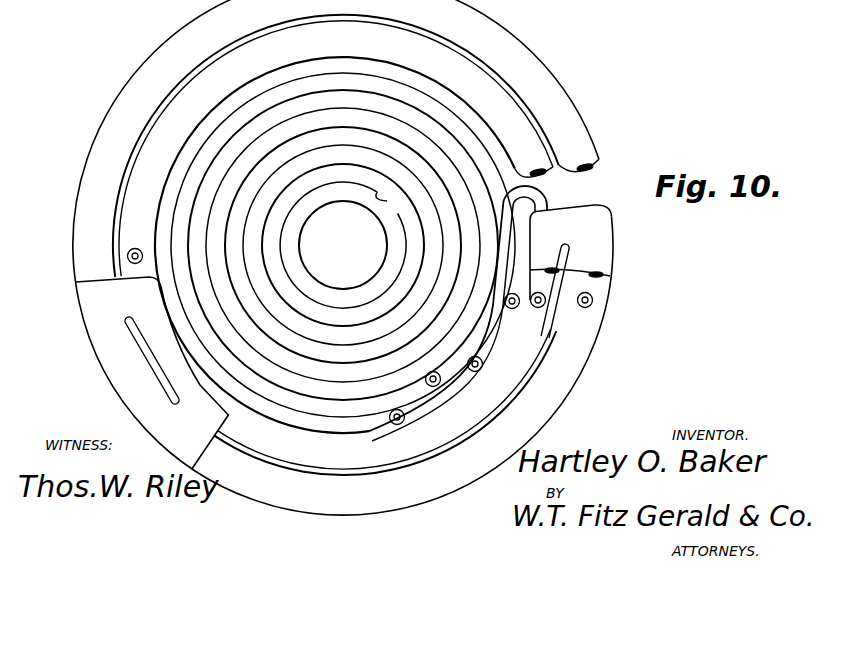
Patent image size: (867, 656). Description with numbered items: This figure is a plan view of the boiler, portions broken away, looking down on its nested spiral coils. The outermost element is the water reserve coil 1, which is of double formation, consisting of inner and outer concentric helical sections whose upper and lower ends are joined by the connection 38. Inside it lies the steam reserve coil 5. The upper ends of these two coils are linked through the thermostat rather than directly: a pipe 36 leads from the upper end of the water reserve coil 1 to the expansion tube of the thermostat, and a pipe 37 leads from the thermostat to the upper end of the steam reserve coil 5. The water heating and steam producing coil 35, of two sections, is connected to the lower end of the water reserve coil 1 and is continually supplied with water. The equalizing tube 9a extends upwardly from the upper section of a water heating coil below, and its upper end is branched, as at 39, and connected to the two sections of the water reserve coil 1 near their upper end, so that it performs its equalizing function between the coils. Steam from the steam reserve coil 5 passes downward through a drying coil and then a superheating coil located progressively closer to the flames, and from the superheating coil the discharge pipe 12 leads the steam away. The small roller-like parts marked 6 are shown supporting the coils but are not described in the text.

The water reserve coil 1 is at (138, 187).
The steam reserve coil 5 is at (437, 118).
The water heating and steam producing coil 35 is at (543, 208).
The equalizing tube 9a is at (515, 308).
The connection of coil sections 38 is at (580, 225).
The pipe 36 is at (128, 257).
The branch 39 is at (594, 300).
The discharge pipe 12 is at (483, 367).
The pipe 37 is at (440, 382).
The roller 6 is at (399, 425).